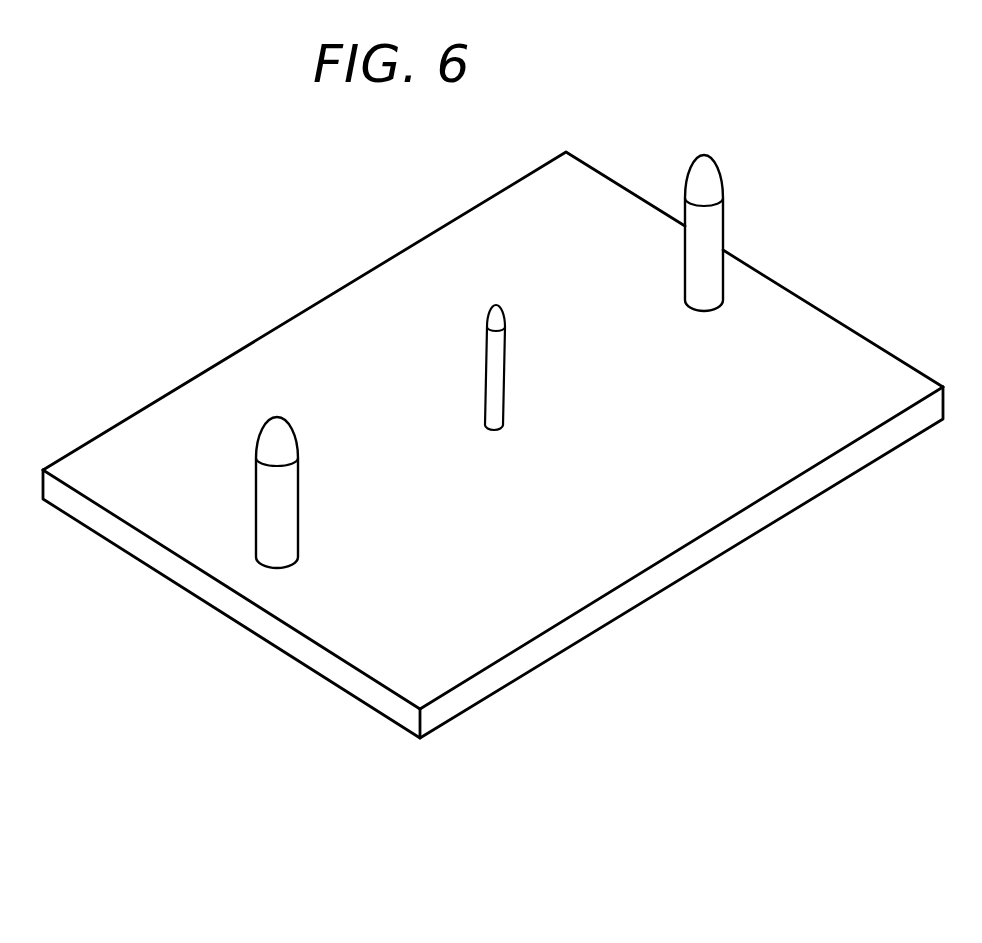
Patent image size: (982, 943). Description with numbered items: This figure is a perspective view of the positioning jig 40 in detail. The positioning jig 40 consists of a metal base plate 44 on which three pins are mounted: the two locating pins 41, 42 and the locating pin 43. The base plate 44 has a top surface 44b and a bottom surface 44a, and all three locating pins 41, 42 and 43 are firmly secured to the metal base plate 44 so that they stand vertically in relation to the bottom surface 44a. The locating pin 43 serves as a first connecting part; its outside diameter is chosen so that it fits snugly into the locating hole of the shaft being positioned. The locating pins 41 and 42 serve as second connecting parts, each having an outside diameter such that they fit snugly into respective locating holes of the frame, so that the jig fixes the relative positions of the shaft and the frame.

The positioning jig 40 is at (812, 132).
The locating pin 41 is at (254, 498).
The locating pin 42 is at (725, 228).
The locating pin 43 is at (505, 385).
The metal base plate 44 is at (817, 303).
The bottom surface 44a is at (695, 513).
The top surface 44b is at (790, 460).